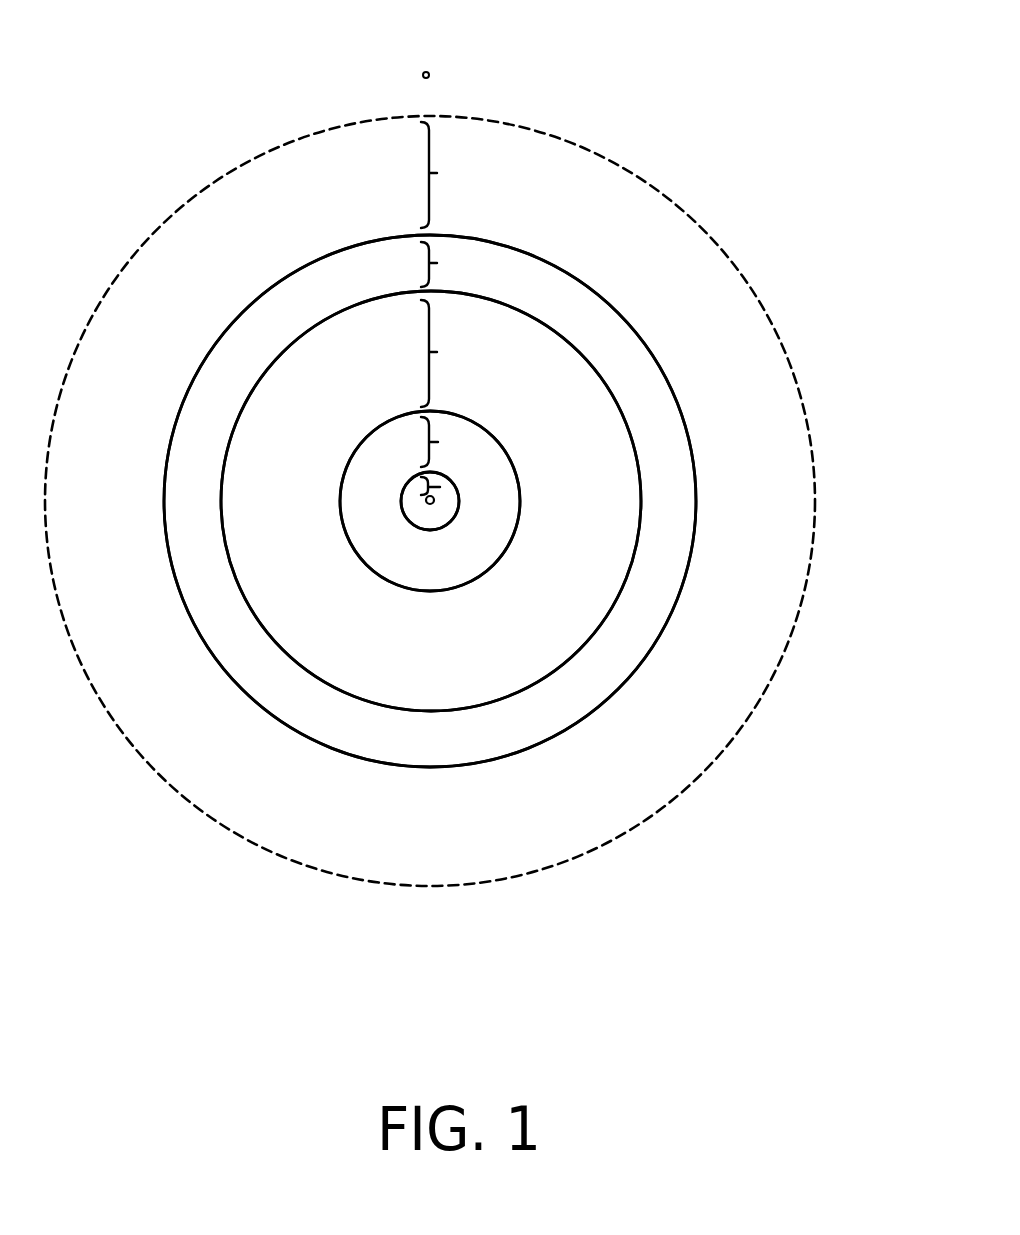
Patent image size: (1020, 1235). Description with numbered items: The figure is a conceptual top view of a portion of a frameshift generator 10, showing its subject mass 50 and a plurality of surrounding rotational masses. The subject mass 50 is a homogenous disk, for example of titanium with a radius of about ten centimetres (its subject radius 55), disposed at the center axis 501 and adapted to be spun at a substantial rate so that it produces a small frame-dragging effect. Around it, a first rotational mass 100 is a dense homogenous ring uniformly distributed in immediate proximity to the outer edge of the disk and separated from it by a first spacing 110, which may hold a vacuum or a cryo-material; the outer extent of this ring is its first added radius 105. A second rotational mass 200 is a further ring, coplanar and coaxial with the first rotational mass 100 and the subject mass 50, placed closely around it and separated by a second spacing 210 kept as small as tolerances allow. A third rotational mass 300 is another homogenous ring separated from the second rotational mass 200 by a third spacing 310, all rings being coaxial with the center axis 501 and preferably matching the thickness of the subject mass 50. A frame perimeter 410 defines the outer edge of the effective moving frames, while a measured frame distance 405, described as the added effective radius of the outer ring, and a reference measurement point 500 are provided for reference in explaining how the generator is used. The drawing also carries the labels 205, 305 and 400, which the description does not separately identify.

The frameshift generator 10 is at (219, 146).
The subject mass 50 is at (445, 506).
The subject radius 55 is at (440, 487).
The first rotational mass 100 is at (495, 523).
The first added radius 105 is at (438, 442).
The first spacing 110 is at (402, 513).
The second rotational mass 200 is at (615, 532).
The second cladding layer thickness 205 is at (437, 352).
The second spacing 210 is at (380, 577).
The third rotational mass 300 is at (657, 592).
The third cladding layer thickness 305 is at (437, 263).
The third spacing 310 is at (348, 692).
The outer coating layer 400 is at (784, 651).
The measured frame distance 405 is at (437, 173).
The frame perimeter 410 is at (368, 760).
The reference measurement point 500 is at (429, 73).
The center axis 501 is at (404, 489).